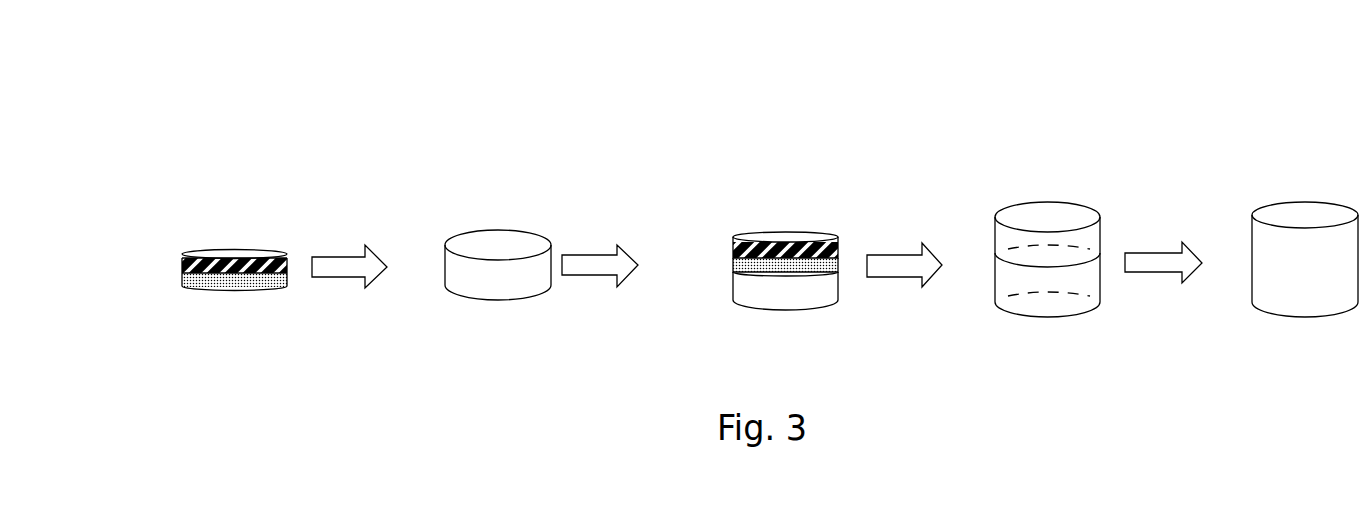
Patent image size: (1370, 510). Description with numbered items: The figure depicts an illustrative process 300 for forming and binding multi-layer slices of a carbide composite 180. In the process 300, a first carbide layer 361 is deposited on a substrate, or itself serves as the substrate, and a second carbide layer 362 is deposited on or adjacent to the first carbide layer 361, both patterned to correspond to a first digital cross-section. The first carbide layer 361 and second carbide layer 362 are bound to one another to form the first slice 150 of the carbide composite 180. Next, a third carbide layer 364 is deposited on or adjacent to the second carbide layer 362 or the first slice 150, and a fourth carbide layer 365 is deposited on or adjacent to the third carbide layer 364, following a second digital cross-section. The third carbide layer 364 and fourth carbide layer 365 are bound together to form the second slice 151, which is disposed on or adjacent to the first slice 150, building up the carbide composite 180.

The process 300 is at (207, 151).
The first carbide layer 361 is at (183, 277).
The second carbide layer 362 is at (183, 267).
The first slice 150 is at (445, 266).
The third carbide layer 364 is at (733, 265).
The fourth carbide layer 365 is at (733, 250).
The second slice 151 is at (995, 240).
The carbide composite 180 is at (1252, 225).